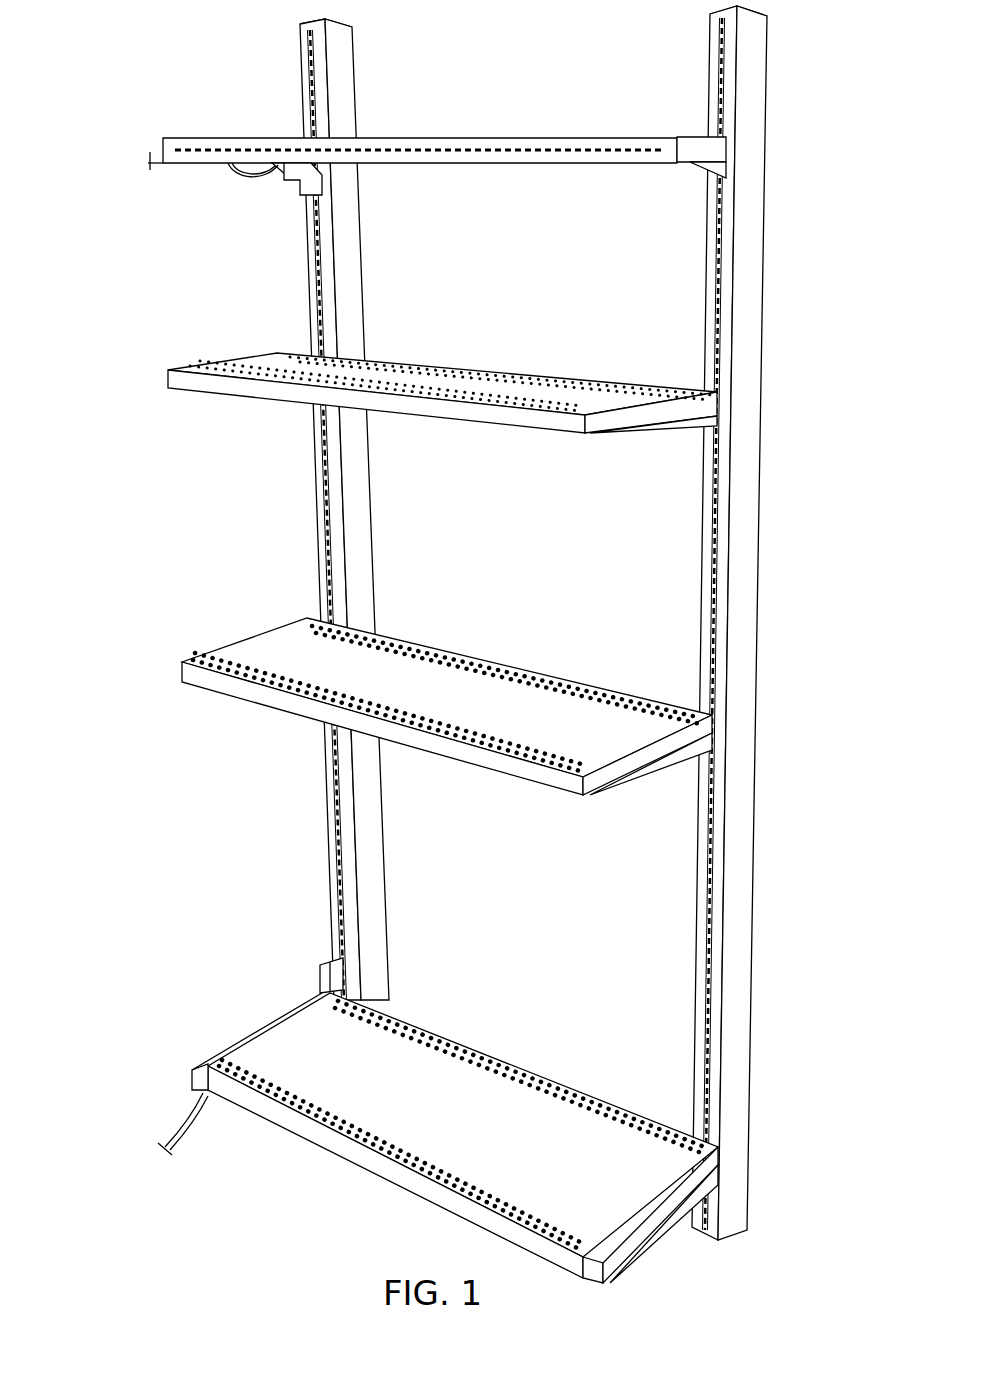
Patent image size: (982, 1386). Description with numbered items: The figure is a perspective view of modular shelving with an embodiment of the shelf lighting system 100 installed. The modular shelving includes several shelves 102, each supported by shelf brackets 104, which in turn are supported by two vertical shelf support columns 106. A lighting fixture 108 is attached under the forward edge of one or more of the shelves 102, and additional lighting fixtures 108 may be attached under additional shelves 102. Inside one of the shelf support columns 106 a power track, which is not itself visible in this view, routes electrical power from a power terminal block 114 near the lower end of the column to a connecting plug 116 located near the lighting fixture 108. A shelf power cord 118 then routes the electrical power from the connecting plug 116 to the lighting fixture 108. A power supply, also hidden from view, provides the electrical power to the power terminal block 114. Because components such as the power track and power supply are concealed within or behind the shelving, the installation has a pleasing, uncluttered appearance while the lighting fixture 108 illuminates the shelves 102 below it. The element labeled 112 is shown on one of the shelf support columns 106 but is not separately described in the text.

The shelf lighting system 100 is at (137, 525).
The shelves 102 is at (163, 140).
The shelf brackets 104 is at (276, 172).
The shelf support columns 106 is at (301, 22).
The lighting fixture 108 is at (633, 163).
The slot track 112 is at (318, 473).
The power terminal block 114 is at (318, 963).
The connecting plug 116 is at (297, 192).
The shelf power cord 118 is at (230, 170).